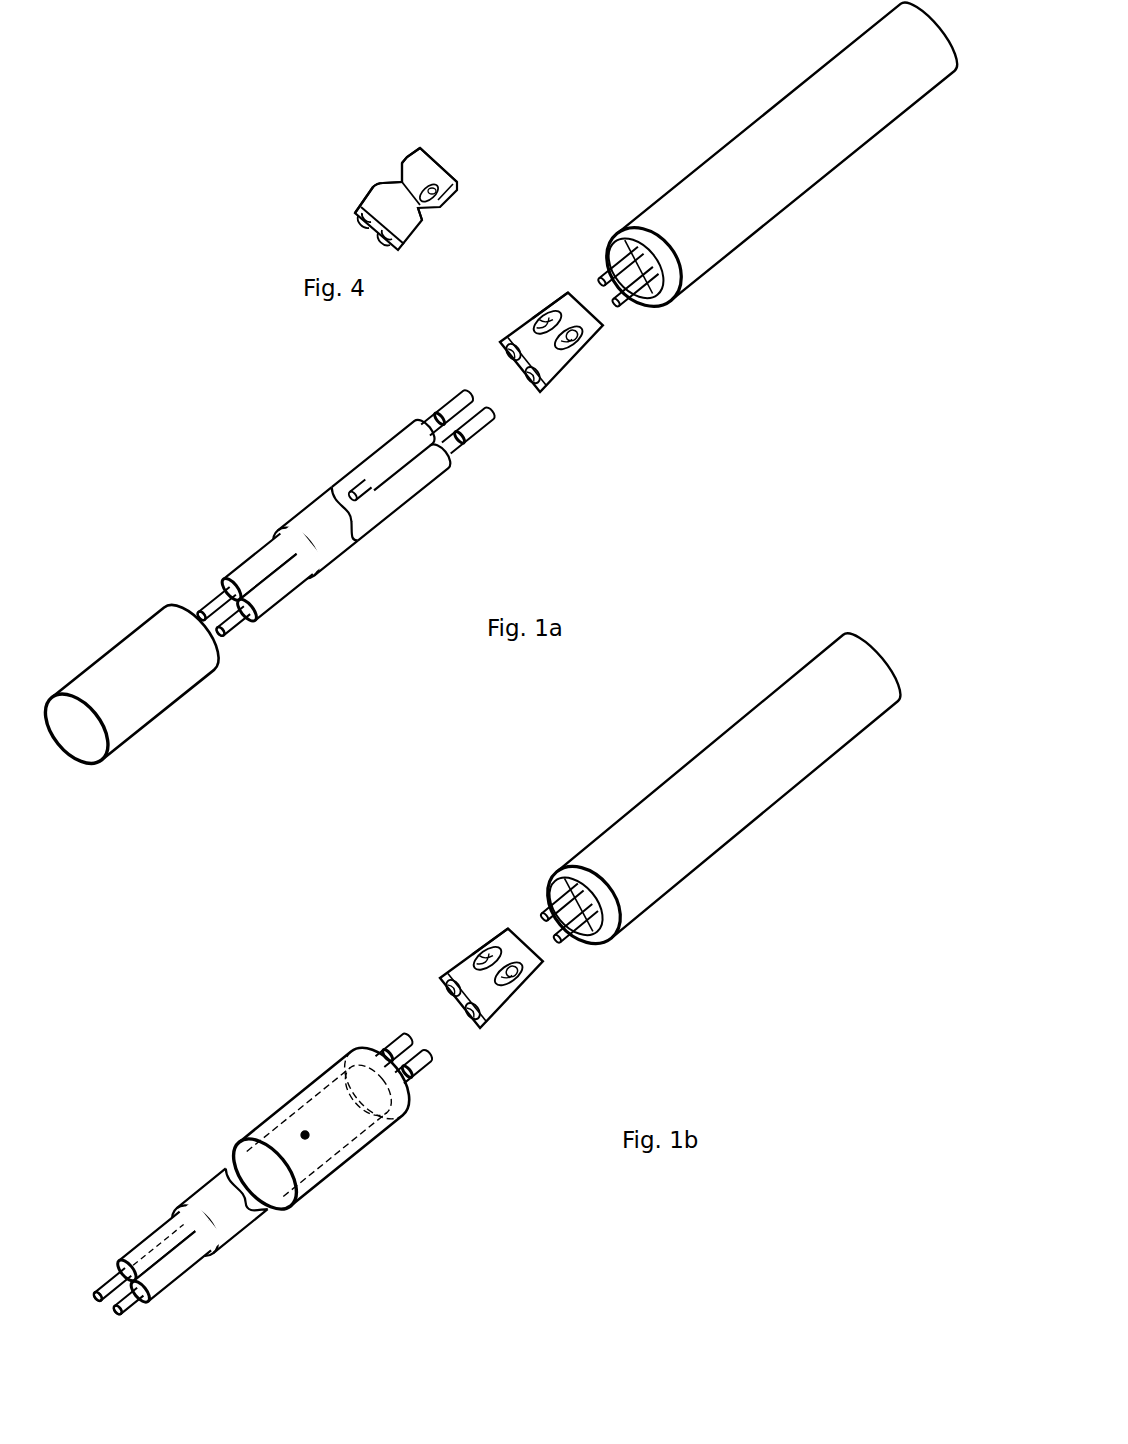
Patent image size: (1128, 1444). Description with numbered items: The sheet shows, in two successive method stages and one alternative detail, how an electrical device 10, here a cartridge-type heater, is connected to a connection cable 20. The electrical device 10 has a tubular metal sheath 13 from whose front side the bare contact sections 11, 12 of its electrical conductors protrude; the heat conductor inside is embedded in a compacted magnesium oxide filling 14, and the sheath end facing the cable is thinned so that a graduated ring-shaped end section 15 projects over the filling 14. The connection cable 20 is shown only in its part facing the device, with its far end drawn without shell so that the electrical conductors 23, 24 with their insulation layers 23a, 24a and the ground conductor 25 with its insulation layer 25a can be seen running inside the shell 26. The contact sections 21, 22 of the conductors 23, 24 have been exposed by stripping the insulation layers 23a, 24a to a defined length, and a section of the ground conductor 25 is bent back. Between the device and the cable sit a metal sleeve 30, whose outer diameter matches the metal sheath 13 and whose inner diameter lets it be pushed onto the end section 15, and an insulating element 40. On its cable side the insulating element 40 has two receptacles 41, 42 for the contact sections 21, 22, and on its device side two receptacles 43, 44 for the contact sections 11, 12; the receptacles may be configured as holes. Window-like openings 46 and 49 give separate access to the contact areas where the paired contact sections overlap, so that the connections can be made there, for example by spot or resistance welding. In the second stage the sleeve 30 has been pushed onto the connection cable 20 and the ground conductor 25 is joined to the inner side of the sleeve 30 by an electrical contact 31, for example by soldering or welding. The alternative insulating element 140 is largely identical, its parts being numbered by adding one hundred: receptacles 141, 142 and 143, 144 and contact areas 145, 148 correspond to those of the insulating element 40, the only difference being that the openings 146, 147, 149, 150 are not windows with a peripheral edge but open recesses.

In FIG. 1A, the electrical device 10 is at (759, 193).
In FIG. 1B, the electrical device 10 is at (707, 786).
In FIG. 1A, the contact section 11 is at (630, 303).
In FIG. 1B, the contact section 11 is at (571, 942).
In FIG. 1A, the contact section 12 is at (607, 278).
In FIG. 1B, the contact section 12 is at (552, 912).
In FIG. 1A, the tubular metal sheath 13 is at (862, 113).
In FIG. 1B, the tubular metal sheath 13 is at (854, 720).
In FIG. 1A, the magnesium oxide filling 14 is at (658, 297).
In FIG. 1B, the magnesium oxide filling 14 is at (600, 946).
In FIG. 1A, the ring-shaped end section 15 is at (680, 293).
In FIG. 1B, the ring-shaped end section 15 is at (616, 927).
In FIG. 1A, the connection cable 20 is at (324, 544).
In FIG. 1B, the connection cable 20 is at (258, 1191).
In FIG. 1A, the contact section 21 is at (470, 422).
In FIG. 1B, the contact section 21 is at (417, 1077).
In FIG. 1A, the contact section 22 is at (448, 410).
In FIG. 1B, the contact section 22 is at (382, 1048).
In FIG. 1A, the electrical conductor 23 is at (237, 617).
In FIG. 1B, the electrical conductor 23 is at (137, 1307).
In FIG. 1A, the insulation layer 23a is at (273, 595).
In FIG. 1B, the insulation layer 23a is at (165, 1278).
In FIG. 1A, the electrical conductor 24 is at (203, 617).
In FIG. 1B, the electrical conductor 24 is at (107, 1307).
In FIG. 1A, the insulation layer 24a is at (235, 620).
In FIG. 1B, the insulation layer 24a is at (133, 1303).
In FIG. 1A, the ground conductor 25 is at (405, 580).
In FIG. 1B, the ground conductor 25 is at (107, 1277).
In FIG. 1A, the insulation layer 25a is at (408, 518).
In FIG. 1B, the insulation layer 25a is at (138, 1250).
In FIG. 1A, the shell 26 is at (355, 482).
In FIG. 1B, the shell 26 is at (217, 1187).
In FIG. 1A, the sleeve 30 is at (132, 665).
In FIG. 1B, the sleeve 30 is at (350, 1152).
In FIG. 1B, the electrical contact 31 is at (305, 1137).
In FIG. 1A, the insulating element 40 is at (547, 398).
In FIG. 1B, the insulating element 40 is at (482, 1031).
In FIG. 1A, the receptacle 41 is at (530, 388).
In FIG. 1B, the receptacle 41 is at (465, 1023).
In FIG. 1A, the receptacle 42 is at (498, 360).
In FIG. 1B, the receptacle 42 is at (443, 1003).
In FIG. 1A, the receptacle 43 is at (583, 338).
In FIG. 1B, the receptacle 43 is at (520, 968).
In FIG. 1A, the receptacle 44 is at (558, 300).
In FIG. 1B, the receptacle 44 is at (495, 930).
In FIG. 1A, the opening 46 is at (565, 343).
In FIG. 1B, the opening 46 is at (503, 973).
In FIG. 1A, the opening 49 is at (540, 315).
In FIG. 1B, the opening 49 is at (478, 952).
In FIG. 4, the insulating element 140 is at (395, 152).
In FIG. 4, the receptacle 141 is at (393, 253).
In FIG. 4, the receptacle 142 is at (360, 223).
In FIG. 4, the receptacle 143 is at (447, 187).
In FIG. 4, the receptacle 144 is at (413, 167).
In FIG. 4, the contact area 145 is at (423, 210).
In FIG. 4, the opening 146 is at (435, 193).
In FIG. 4, the opening 147 is at (425, 218).
In FIG. 4, the contact area 148 is at (397, 182).
In FIG. 4, the opening 149 is at (392, 183).
In FIG. 4, the opening 150 is at (400, 163).